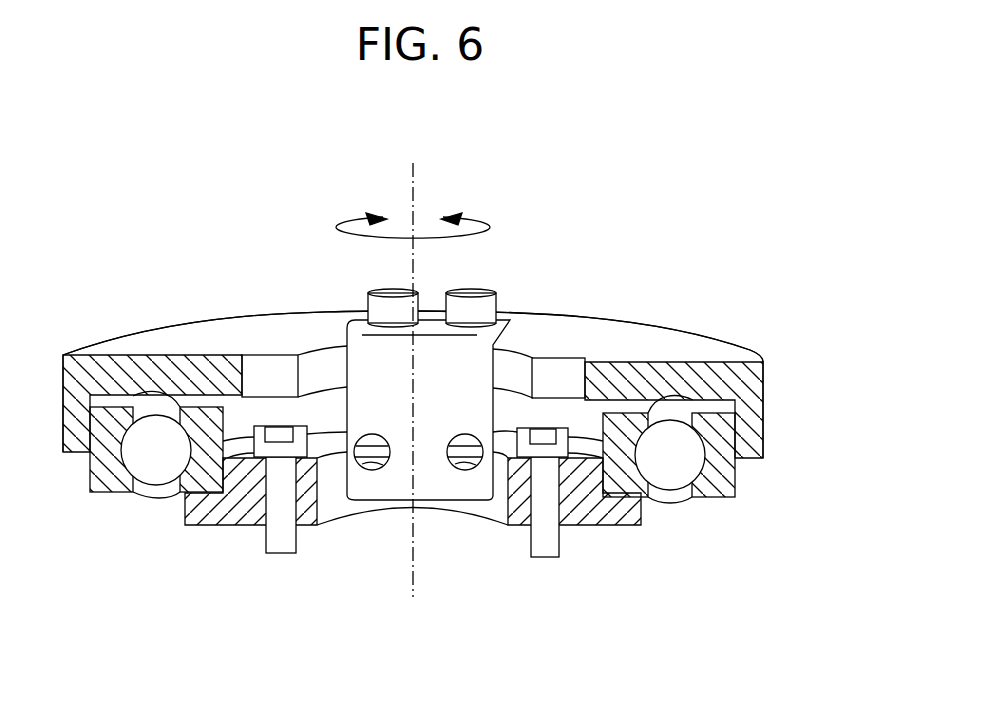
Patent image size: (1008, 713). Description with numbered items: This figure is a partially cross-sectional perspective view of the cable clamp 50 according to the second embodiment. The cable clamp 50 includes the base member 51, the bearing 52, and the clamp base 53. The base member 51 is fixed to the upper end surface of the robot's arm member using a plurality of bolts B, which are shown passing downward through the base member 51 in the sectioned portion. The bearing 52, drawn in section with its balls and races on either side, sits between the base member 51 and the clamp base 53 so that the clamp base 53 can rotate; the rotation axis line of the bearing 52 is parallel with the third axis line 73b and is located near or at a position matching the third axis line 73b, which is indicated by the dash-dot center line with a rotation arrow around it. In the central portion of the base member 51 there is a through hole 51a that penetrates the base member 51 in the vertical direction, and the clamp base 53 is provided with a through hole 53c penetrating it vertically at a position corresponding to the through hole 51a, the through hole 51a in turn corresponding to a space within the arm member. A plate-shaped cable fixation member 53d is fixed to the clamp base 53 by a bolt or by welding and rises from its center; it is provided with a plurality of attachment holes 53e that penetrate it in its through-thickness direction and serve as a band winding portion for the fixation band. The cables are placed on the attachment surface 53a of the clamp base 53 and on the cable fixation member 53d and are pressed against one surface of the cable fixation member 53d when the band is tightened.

The cable clamp 50 is at (210, 261).
The clamp base 53 is at (765, 400).
The attachment surface 53a is at (657, 341).
The through hole 53c is at (518, 365).
The cable fixation member 53d is at (363, 368).
The attachment holes 53e is at (373, 469).
The third axis line 73b is at (413, 175).
The bearing 52 is at (737, 483).
The base member 51 is at (641, 522).
The through hole 51a is at (506, 513).
The bolts B is at (260, 541).